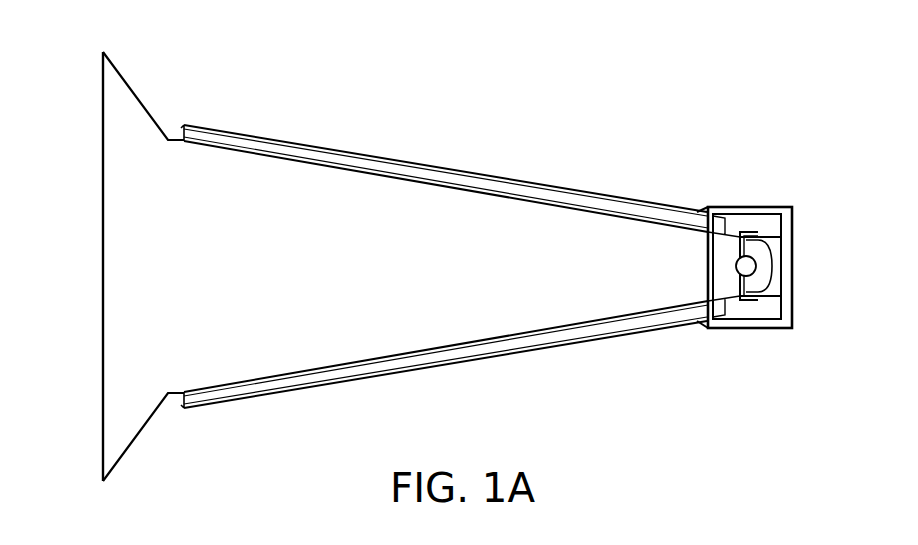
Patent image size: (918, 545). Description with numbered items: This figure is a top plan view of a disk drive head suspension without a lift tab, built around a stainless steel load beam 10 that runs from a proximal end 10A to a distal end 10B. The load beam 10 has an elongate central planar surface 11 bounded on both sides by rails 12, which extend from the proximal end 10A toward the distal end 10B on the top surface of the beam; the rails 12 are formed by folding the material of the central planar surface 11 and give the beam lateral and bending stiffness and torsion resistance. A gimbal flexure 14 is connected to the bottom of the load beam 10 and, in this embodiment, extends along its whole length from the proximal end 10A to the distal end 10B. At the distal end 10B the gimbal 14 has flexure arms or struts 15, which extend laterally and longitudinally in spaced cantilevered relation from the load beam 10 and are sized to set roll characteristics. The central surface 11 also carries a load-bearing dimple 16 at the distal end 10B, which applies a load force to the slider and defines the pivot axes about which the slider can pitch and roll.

The load beam 10 is at (437, 266).
The proximal end 10A is at (76, 268).
The distal end 10B is at (758, 352).
The central planar surface 11 is at (274, 291).
The rails 12 is at (322, 148).
The gimbal flexure 14 is at (765, 289).
The gimbal struts 15 is at (730, 206).
The load-bearing dimple 16 is at (757, 266).